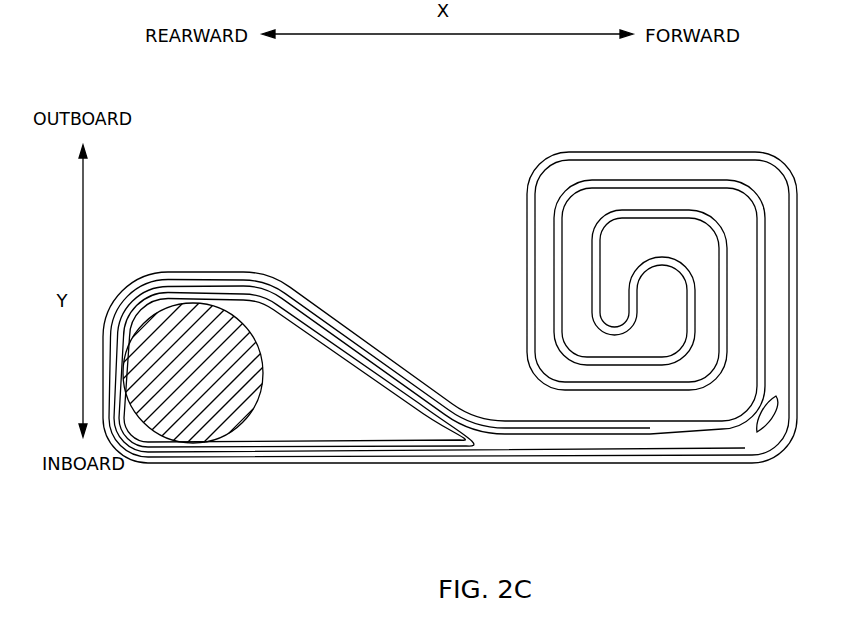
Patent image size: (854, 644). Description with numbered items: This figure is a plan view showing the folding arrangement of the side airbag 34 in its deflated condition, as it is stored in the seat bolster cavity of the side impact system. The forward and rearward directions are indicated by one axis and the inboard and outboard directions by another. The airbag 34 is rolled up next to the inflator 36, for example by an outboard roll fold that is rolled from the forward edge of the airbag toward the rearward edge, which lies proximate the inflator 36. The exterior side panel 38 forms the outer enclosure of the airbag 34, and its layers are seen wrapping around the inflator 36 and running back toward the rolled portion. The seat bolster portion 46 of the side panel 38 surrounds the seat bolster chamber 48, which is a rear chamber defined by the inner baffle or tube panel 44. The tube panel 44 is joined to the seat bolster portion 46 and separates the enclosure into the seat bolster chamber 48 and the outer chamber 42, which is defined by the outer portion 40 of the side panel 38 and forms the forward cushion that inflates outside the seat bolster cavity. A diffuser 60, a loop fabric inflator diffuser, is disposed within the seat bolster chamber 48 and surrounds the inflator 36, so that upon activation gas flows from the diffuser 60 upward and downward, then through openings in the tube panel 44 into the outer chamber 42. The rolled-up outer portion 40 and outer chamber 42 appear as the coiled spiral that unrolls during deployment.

The side airbag 34 is at (301, 165).
The inflator 36 is at (208, 310).
The exterior side panel 38 is at (434, 472).
The outer portion 40 is at (613, 155).
The outer chamber 42 is at (682, 163).
The inner baffle or tube panel 44 is at (770, 412).
The seat bolster portion 46 is at (322, 313).
The seat bolster chamber 48 is at (537, 444).
The diffuser 60 is at (260, 302).